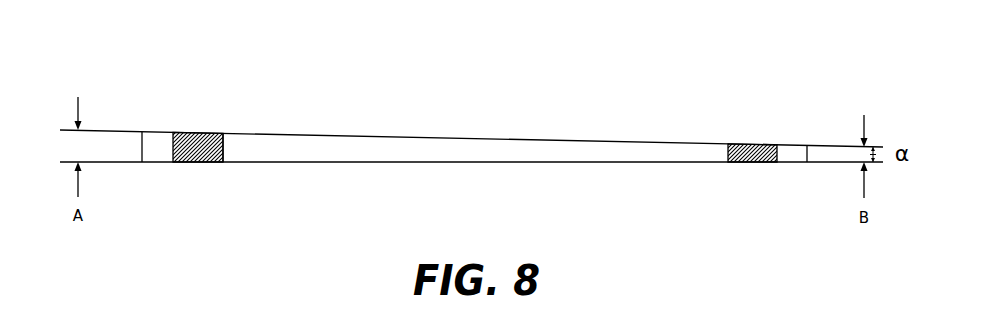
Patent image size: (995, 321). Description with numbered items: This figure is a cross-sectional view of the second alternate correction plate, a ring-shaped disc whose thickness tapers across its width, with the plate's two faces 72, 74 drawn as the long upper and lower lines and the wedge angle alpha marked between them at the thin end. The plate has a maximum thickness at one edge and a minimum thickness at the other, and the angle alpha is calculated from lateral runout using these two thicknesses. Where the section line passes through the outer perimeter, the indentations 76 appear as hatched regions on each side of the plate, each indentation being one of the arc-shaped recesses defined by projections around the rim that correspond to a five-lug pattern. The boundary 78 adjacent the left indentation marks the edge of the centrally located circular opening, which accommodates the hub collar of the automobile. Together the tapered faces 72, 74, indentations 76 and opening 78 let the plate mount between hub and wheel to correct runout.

The substrate plate 72 is at (553, 162).
The top surface of plate 74 is at (663, 140).
The indentations 76 is at (171, 137).
The opening 78 is at (222, 139).